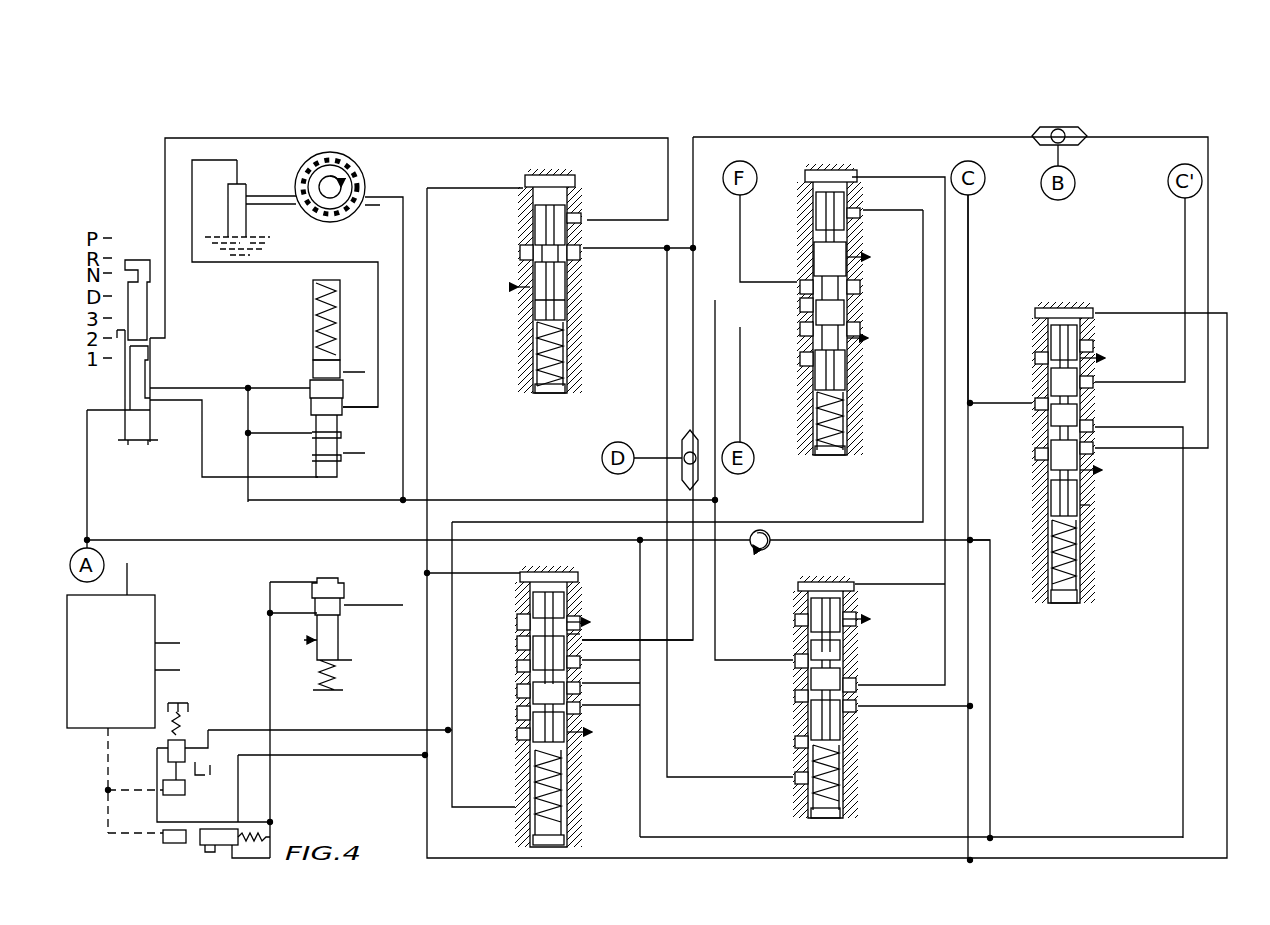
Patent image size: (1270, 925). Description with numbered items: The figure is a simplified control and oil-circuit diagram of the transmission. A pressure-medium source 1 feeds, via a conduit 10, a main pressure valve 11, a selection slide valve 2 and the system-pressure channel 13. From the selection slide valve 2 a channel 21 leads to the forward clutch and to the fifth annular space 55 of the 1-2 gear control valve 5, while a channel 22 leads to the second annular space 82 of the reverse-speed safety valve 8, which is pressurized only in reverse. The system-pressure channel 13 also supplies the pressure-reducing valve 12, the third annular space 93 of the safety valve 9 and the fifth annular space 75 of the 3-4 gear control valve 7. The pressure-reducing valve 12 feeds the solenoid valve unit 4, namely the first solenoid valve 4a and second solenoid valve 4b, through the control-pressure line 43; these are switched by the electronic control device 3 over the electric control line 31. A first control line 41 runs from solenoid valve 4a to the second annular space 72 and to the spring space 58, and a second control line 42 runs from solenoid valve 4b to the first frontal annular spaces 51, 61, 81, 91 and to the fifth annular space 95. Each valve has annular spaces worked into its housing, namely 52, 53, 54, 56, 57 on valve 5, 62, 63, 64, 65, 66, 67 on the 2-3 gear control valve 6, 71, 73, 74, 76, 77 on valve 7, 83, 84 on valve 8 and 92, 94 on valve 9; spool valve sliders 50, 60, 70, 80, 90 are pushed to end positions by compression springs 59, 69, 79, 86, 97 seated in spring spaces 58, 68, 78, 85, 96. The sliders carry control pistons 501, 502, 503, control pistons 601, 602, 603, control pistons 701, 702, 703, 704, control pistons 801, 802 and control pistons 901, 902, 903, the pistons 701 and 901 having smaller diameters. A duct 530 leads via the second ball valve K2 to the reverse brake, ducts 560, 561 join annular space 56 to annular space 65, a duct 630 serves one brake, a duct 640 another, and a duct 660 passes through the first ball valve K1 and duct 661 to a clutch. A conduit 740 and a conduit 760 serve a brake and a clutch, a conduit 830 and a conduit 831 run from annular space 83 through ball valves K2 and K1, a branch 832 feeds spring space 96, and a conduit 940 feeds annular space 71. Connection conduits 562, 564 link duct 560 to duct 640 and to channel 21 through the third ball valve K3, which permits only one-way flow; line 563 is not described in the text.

The pressure-medium source 1 is at (370, 180).
The selection slide valve 2 is at (128, 237).
The electronic control device 3 is at (156, 612).
The solenoid valve 4 is at (195, 785).
The first solenoid valve 4a is at (190, 724).
The second solenoid valve 4b is at (186, 838).
The 1-2 gear control valve 5 is at (551, 661).
The 2-3 gear control valve 6 is at (1074, 447).
The 3-4 gear control valve 7 is at (834, 284).
The reverse-speed safety valve 8 is at (568, 254).
The safety valve 9 is at (861, 678).
The conduit 10 is at (402, 232).
The main pressure valve 11 is at (306, 317).
The pressure-reducing valve 12 is at (351, 642).
The system-pressure channel 13 is at (376, 501).
The channel 21 is at (158, 537).
The channel 22 is at (323, 120).
The electric control line 31 is at (121, 780).
The first control line 41 is at (355, 710).
The second control line 42 is at (315, 765).
The control-pressure line 43 is at (268, 640).
The spool valve slider 50 is at (578, 638).
The first frontal annular space 51 is at (582, 572).
The second annular space 52 is at (517, 616).
The third annular space 53 is at (516, 642).
The fourth annular space 54 is at (582, 664).
The fifth annular space 55 is at (516, 694).
The sixth annular space 56 is at (516, 710).
The seventh annular space 57 is at (516, 740).
The spring space 58 is at (573, 809).
The compression spring 59 is at (522, 828).
The spool valve slider 60 is at (1032, 416).
The first frontal annular space 61 is at (1046, 299).
The second annular space 62 is at (1028, 346).
The third annular space 63 is at (1114, 374).
The fourth annular space 64 is at (1110, 408).
The fifth annular space 65 is at (1032, 426).
The sixth annular space 66 is at (1110, 466).
The seventh annular space 67 is at (1107, 486).
The spring space 68 is at (1103, 562).
The compression spring 69 is at (1055, 608).
The spool valve slider 70 is at (860, 234).
The first frontal annular space 71 is at (808, 172).
The second annular space 72 is at (800, 205).
The third annular space 73 is at (788, 273).
The fourth annular space 74 is at (862, 286).
The fifth annular space 75 is at (864, 314).
The sixth annular space 76 is at (798, 333).
The seventh annular space 77 is at (802, 362).
The spring space 78 is at (858, 406).
The compression spring 79 is at (812, 416).
The spool valve slider 80 is at (520, 285).
The first frontal annular space 81 is at (582, 178).
The second annular space 82 is at (522, 225).
The third annular space 83 is at (519, 262).
The fourth annular space 84 is at (582, 286).
The spring space 85 is at (578, 358).
The compression spring 86 is at (535, 380).
The spool valve slider 90 is at (856, 646).
The first frontal annular space 91 is at (797, 582).
The second annular space 92 is at (798, 614).
The third annular space 93 is at (860, 673).
The fourth annular space 94 is at (862, 712).
The fifth annular space 95 is at (795, 726).
The spring space 96 is at (856, 768).
The compression spring 97 is at (796, 799).
The control piston 501 is at (576, 602).
The control piston 502 is at (523, 654).
The control piston 503 is at (605, 740).
The duct 530 is at (680, 630).
The duct 560 is at (665, 790).
The duct 561 is at (1181, 720).
The connection conduit 562 is at (986, 540).
The oil passage 563 is at (1004, 213).
The connection conduit 564 is at (905, 545).
The control piston 601 is at (1100, 340).
The control piston 602 is at (1032, 454).
The control piston 603 is at (1106, 524).
The duct 630 is at (1180, 212).
The duct 640 is at (1012, 396).
The duct 660 is at (1148, 118).
The duct 661 is at (1054, 164).
The control piston 701 is at (844, 207).
The control piston 702 is at (860, 256).
The control piston 703 is at (860, 339).
The control piston 704 is at (858, 386).
The conduit 740 is at (748, 238).
The conduit 760 is at (767, 402).
The control piston 801 is at (582, 216).
The control piston 802 is at (536, 312).
The conduit 830 is at (623, 246).
The conduit 831 is at (712, 117).
The branch 832 is at (662, 370).
The control piston 901 is at (799, 644).
The control piston 902 is at (804, 686).
The control piston 903 is at (799, 744).
The conduit 940 is at (912, 615).
The first ball valve K1 is at (1088, 142).
The second ball valve K2 is at (678, 435).
The third ball valve K3 is at (773, 534).